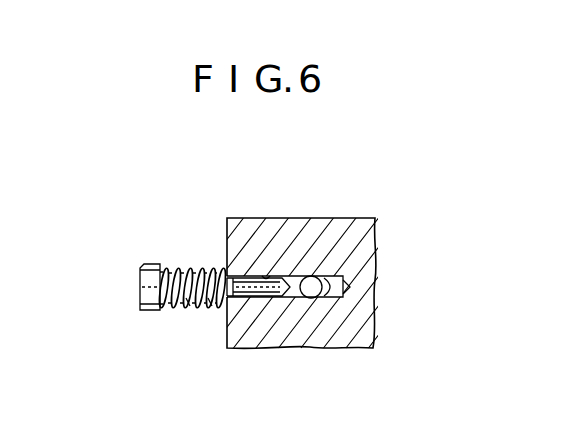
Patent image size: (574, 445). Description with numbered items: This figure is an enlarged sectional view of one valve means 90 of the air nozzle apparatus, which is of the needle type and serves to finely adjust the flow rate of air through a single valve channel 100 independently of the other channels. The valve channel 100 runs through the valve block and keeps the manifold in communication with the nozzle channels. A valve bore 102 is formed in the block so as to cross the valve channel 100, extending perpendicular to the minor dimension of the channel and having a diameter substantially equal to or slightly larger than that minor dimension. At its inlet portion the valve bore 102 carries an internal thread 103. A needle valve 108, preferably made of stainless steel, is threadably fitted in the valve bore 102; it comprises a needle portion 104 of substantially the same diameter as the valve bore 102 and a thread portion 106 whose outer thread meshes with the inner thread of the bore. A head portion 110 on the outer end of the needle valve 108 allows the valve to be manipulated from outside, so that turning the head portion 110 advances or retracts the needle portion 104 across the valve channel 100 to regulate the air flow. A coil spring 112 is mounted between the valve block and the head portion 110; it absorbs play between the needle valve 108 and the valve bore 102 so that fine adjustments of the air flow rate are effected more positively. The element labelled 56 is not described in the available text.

The bore 56 is at (269, 232).
The valve means 90 is at (175, 250).
The valve channel 100 is at (322, 300).
The valve bore 102 is at (377, 260).
The internal thread 103 is at (268, 274).
The needle portion 104 is at (262, 300).
The thread portion 106 is at (200, 264).
The needle valve 108 is at (214, 312).
The head portion 110 is at (140, 272).
The coil spring 112 is at (193, 310).